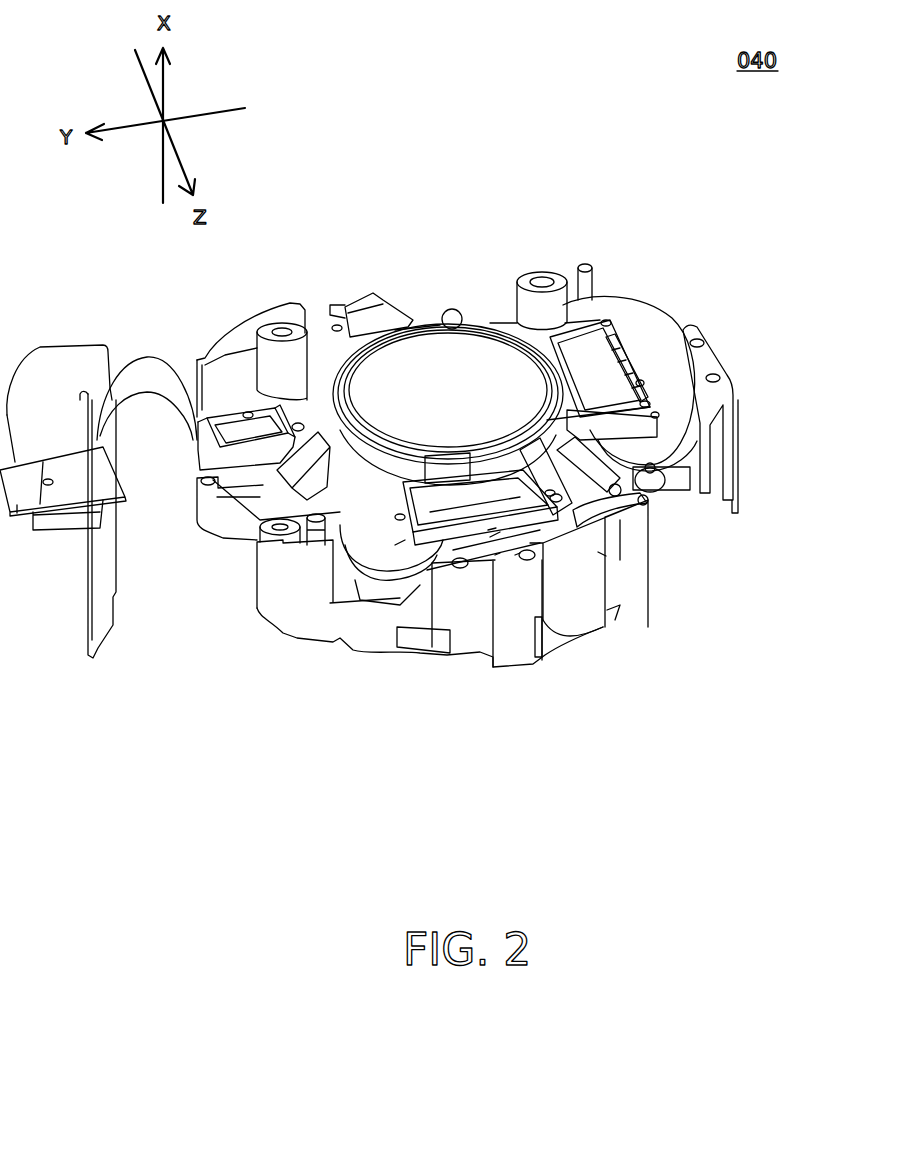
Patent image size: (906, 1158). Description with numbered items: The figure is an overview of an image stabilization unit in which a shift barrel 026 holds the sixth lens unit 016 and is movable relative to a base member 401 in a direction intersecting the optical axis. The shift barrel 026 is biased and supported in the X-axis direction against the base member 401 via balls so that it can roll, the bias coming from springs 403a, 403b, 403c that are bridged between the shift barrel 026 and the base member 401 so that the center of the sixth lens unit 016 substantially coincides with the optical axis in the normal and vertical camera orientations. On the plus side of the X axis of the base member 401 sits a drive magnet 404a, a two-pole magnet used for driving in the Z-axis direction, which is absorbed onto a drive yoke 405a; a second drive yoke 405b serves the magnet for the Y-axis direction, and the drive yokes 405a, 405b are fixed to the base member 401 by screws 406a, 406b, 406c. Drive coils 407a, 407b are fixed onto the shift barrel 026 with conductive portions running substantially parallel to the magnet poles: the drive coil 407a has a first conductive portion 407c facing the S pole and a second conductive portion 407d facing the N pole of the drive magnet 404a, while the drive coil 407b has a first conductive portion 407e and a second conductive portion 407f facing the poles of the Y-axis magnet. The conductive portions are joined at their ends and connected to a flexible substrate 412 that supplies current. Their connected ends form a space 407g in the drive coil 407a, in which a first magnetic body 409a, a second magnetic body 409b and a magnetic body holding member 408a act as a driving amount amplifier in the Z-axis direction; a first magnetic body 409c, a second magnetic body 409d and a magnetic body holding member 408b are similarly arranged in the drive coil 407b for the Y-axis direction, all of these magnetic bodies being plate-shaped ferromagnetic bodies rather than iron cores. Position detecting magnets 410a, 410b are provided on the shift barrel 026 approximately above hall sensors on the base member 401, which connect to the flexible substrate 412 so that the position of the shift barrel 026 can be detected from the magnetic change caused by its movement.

The flexible substrate 412 is at (152, 368).
The position detecting magnet 410a is at (363, 322).
The position detecting magnet 410b is at (243, 420).
The sixth lens unit 016 is at (495, 393).
The spring 403c is at (447, 316).
The shift barrel 026 is at (588, 380).
The first conductive portion 407e is at (620, 354).
The magnetic body holding member 408b is at (640, 383).
The drive coil 407b is at (648, 368).
The second conductive portion 407f is at (648, 370).
The second magnetic body 409d is at (640, 380).
The first magnetic body 409c is at (655, 415).
The drive yoke 405b is at (635, 485).
The screw 406c is at (650, 470).
The spring 403b is at (643, 500).
The screw 406b is at (620, 492).
The base member 401 is at (565, 603).
The space 407g is at (600, 555).
The spring 403a is at (260, 517).
The screw 406a is at (398, 547).
The drive coil 407a is at (400, 545).
The drive yoke 405a is at (370, 588).
The drive magnet 404a is at (423, 580).
The magnetic body holding member 408a is at (458, 498).
The first magnetic body 409a is at (495, 530).
The second magnetic body 409b is at (515, 555).
The first conductive portion 407c is at (495, 535).
The second conductive portion 407d is at (492, 530).